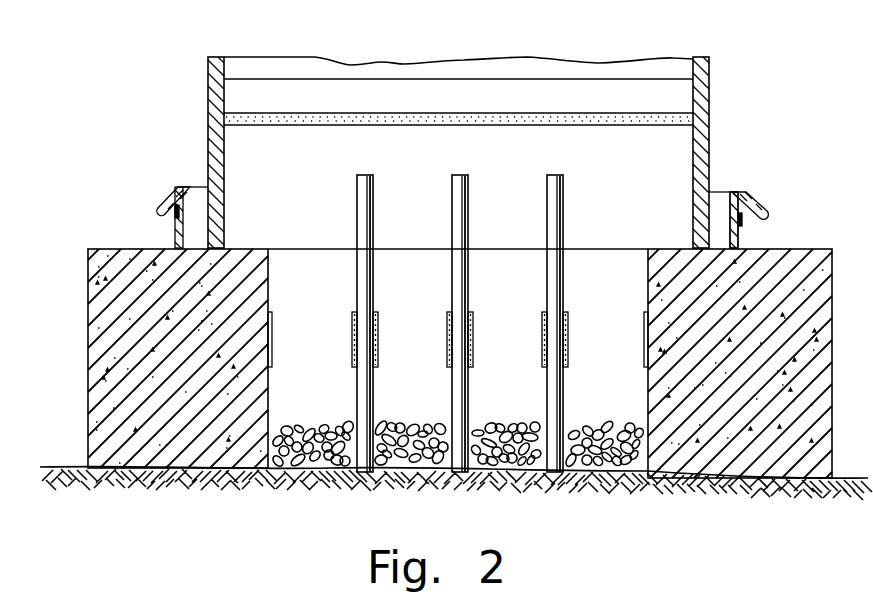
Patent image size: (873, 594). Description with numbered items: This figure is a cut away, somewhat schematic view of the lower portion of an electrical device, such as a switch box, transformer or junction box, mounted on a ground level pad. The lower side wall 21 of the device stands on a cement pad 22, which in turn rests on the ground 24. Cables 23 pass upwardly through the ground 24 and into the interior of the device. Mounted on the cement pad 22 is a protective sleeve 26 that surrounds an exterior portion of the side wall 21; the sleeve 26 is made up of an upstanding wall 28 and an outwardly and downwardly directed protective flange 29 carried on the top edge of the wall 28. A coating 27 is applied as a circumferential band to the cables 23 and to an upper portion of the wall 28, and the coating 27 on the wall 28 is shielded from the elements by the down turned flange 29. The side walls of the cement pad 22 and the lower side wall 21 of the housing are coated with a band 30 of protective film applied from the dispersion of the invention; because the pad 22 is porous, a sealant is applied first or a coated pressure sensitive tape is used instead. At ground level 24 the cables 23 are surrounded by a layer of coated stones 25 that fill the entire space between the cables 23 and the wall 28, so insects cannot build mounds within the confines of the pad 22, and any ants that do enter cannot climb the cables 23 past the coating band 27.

The lower side wall 21 is at (202, 141).
The cement pad 22 is at (88, 375).
The cables 23 is at (374, 205).
The ground 24 is at (88, 468).
The stones 25 is at (334, 426).
The protective sleeve 26 is at (762, 186).
The coating 27 is at (176, 213).
The upstanding wall 28 is at (187, 200).
The protective flange 29 is at (162, 194).
The band of protective film 30 is at (478, 113).